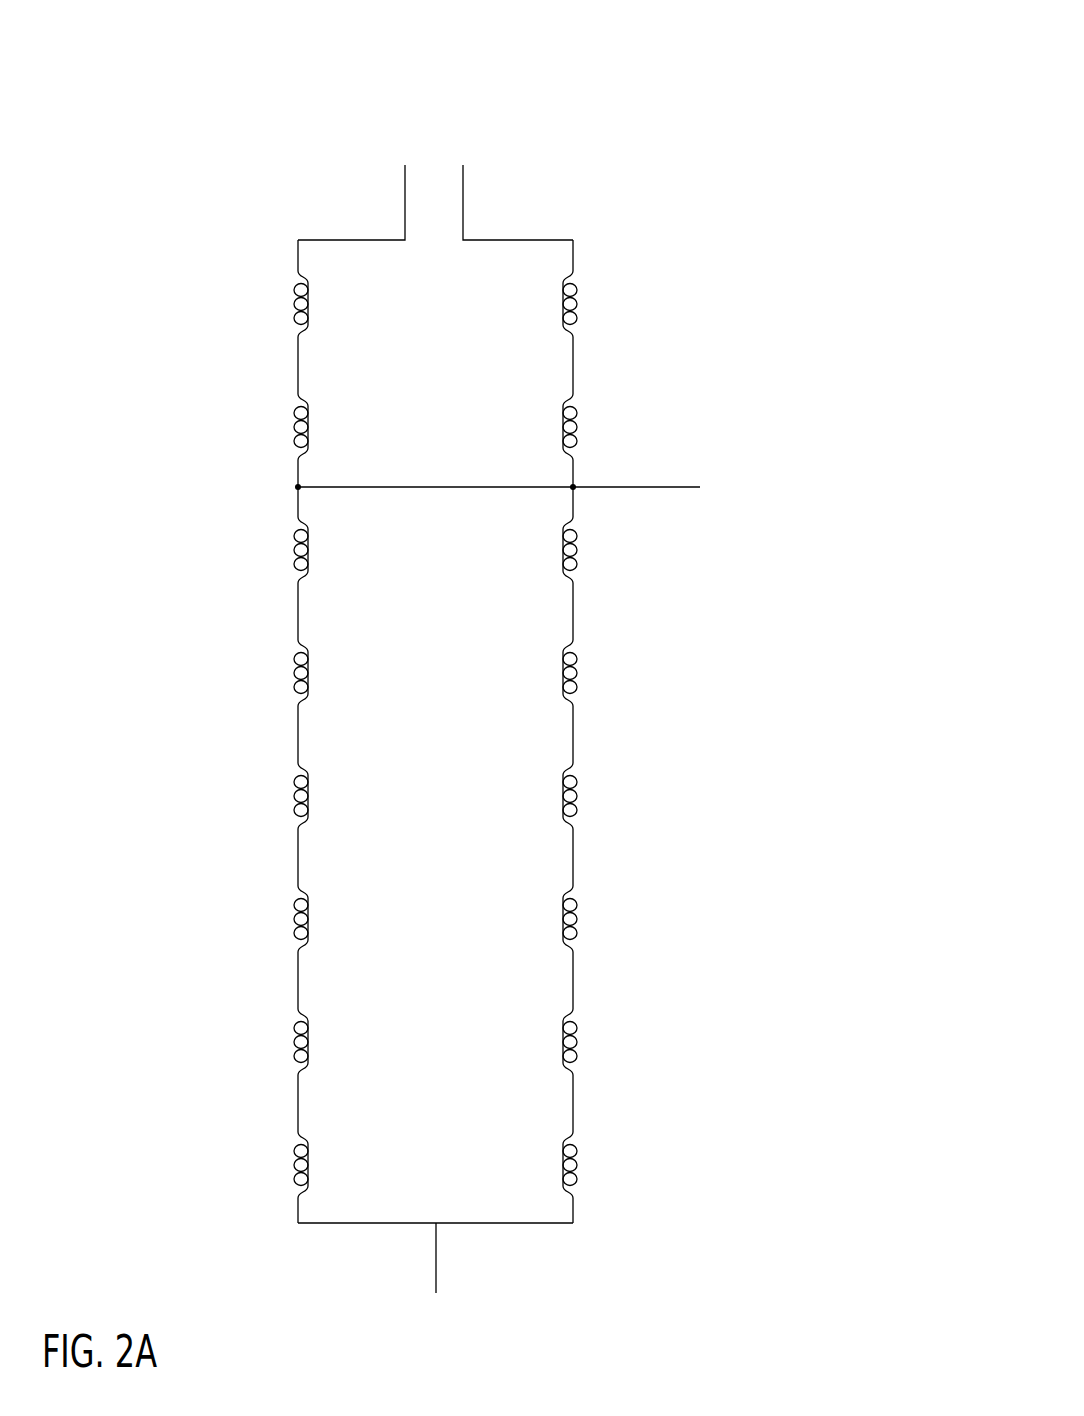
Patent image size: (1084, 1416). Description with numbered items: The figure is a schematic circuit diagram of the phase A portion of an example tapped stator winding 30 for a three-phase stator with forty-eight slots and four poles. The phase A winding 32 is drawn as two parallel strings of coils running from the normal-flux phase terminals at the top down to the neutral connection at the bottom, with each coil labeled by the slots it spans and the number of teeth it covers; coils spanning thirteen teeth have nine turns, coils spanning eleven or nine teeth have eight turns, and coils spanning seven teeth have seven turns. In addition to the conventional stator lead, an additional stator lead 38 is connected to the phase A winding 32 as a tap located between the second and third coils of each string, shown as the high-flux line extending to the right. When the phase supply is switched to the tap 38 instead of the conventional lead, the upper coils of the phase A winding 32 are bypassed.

The tapped stator winding 30 is at (960, 17).
The phase A winding 32 is at (231, 56).
The stator lead 38 is at (779, 520).